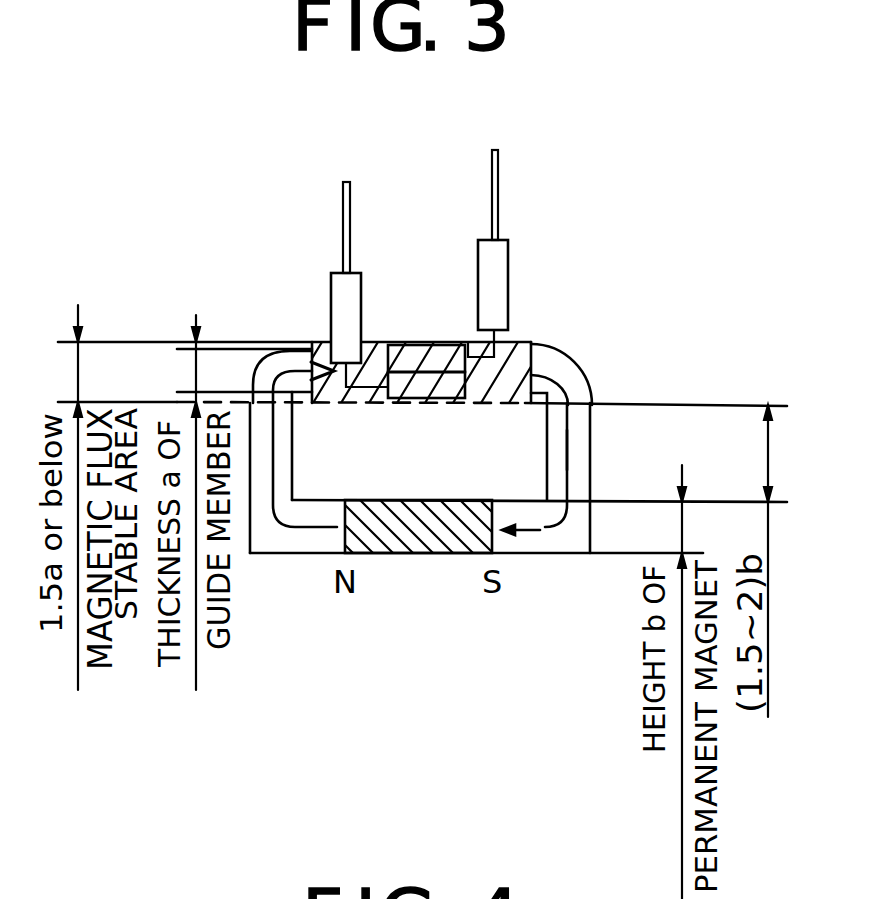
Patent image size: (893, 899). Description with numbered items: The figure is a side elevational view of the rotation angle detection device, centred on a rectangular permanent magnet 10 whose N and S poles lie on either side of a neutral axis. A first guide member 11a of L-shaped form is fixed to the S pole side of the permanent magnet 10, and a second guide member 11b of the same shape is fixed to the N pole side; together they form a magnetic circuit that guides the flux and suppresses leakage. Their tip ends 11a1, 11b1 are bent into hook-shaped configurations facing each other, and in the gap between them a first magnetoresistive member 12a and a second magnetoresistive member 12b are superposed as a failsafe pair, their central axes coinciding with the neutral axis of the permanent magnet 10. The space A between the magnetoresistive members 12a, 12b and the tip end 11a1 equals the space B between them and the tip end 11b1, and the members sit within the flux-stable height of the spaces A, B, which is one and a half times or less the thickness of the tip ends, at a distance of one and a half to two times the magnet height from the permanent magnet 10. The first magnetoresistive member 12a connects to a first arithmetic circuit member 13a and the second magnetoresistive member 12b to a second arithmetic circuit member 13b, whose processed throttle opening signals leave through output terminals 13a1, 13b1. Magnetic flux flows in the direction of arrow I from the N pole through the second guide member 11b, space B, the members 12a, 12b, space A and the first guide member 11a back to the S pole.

The permanent magnet 10 is at (440, 542).
The first guide member 11a is at (558, 537).
The tip end of the first guide member 11a1 is at (578, 386).
The second guide member 11b is at (277, 527).
The tip end of the second guide member 11b1 is at (277, 372).
The first magnetoresistive member 12a is at (423, 340).
The second magnetoresistive member 12b is at (422, 392).
The first arithmetic circuit member 13a is at (497, 273).
The output terminal 13a1 is at (499, 183).
The second arithmetic circuit member 13b is at (334, 282).
The output terminal 13b1 is at (341, 198).
The space A is at (523, 343).
The space B is at (322, 345).
The arrow indicating magnetic flux direction I is at (570, 450).